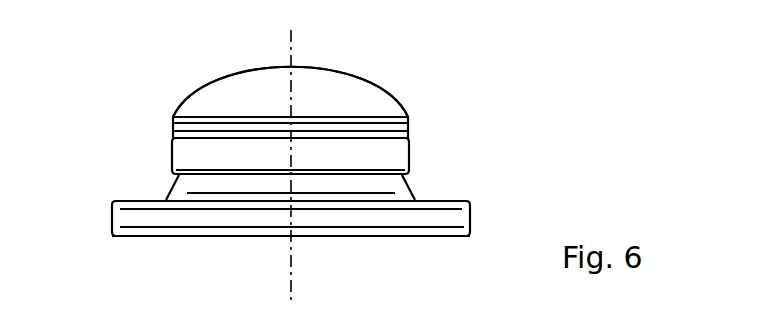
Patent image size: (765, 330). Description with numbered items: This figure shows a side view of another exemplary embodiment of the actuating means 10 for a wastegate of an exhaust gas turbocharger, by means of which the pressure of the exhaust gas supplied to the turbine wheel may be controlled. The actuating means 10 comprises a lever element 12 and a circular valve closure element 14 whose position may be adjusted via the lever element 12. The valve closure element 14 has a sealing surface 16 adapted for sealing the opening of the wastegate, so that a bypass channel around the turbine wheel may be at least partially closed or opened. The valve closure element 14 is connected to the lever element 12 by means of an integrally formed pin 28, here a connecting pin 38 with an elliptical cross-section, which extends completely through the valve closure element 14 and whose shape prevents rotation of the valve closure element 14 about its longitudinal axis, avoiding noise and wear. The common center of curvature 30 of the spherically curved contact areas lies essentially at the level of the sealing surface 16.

The actuating means 10 is at (477, 68).
The lever element 12 is at (394, 164).
The valve closure element 14 is at (131, 221).
The sealing surface 16 is at (170, 246).
The integrally formed pin 28 is at (227, 78).
The connecting pin 38 is at (290, 92).
The center of curvature 30 is at (286, 232).